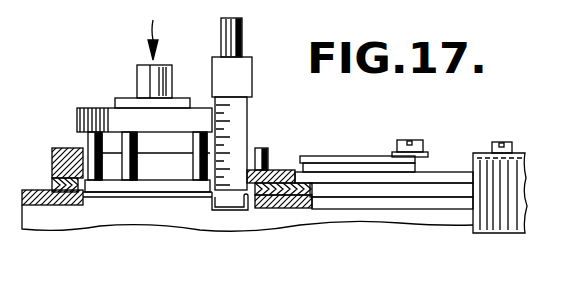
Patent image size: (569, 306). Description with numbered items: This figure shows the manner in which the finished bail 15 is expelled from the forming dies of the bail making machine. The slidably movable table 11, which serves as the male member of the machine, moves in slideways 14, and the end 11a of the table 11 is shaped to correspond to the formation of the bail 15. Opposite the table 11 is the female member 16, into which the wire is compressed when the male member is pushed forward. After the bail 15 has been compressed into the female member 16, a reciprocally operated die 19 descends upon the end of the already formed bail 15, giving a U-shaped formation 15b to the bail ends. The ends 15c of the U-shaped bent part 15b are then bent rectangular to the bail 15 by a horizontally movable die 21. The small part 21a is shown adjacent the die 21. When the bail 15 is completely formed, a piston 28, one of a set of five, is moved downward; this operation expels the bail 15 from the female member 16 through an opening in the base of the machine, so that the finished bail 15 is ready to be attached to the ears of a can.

The reciprocally operated die 19 is at (242, 108).
The piston 28 is at (190, 164).
The female member 16 is at (52, 162).
The bail 15 is at (120, 200).
The U-shaped formation 15b is at (224, 211).
The end of U-shaped bent part 15c is at (255, 209).
The horizontally movable die 21 is at (266, 170).
The clamp pin 21a is at (260, 148).
The end of the table 11a is at (331, 156).
The table 11 is at (432, 163).
The slideway 14 is at (508, 154).